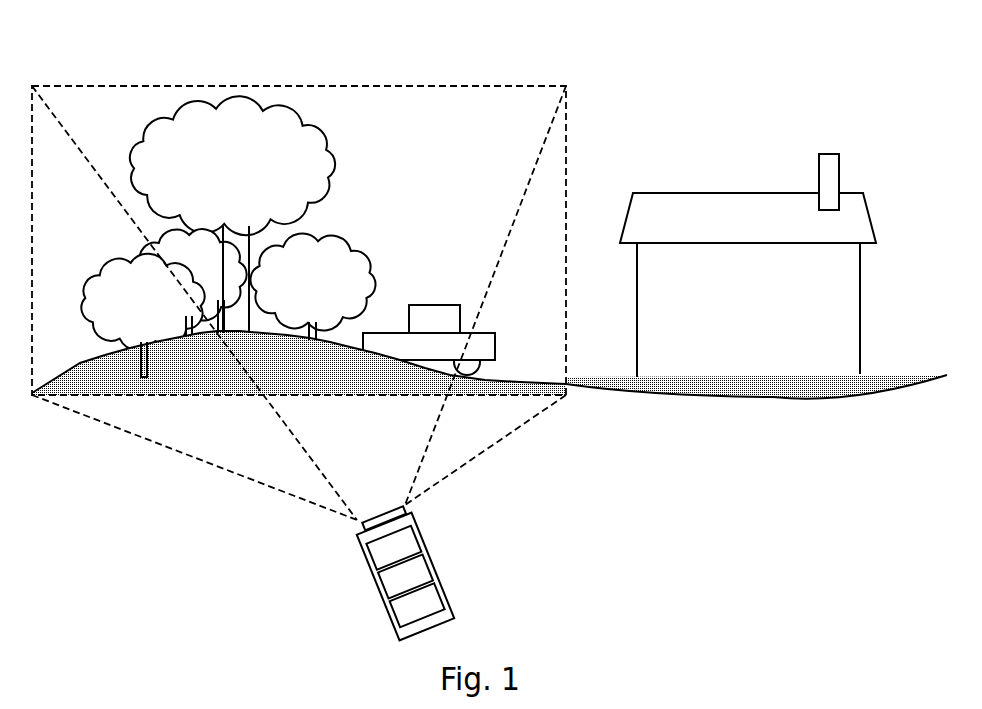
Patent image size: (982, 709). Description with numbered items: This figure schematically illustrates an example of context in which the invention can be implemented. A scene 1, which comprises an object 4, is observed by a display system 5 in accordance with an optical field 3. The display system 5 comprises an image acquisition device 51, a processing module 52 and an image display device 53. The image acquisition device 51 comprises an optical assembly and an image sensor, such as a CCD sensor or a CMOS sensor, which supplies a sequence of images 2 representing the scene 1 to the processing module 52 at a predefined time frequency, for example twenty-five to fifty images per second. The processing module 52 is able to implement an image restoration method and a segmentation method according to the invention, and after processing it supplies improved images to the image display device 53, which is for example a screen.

The scene 1 is at (476, 59).
The sequence of images 2 is at (218, 87).
The optical field 3 is at (222, 468).
The object 4 is at (431, 305).
The display system 5 is at (450, 605).
The image acquisition device 51 is at (369, 558).
The processing module 52 is at (384, 590).
The image display device 53 is at (378, 640).